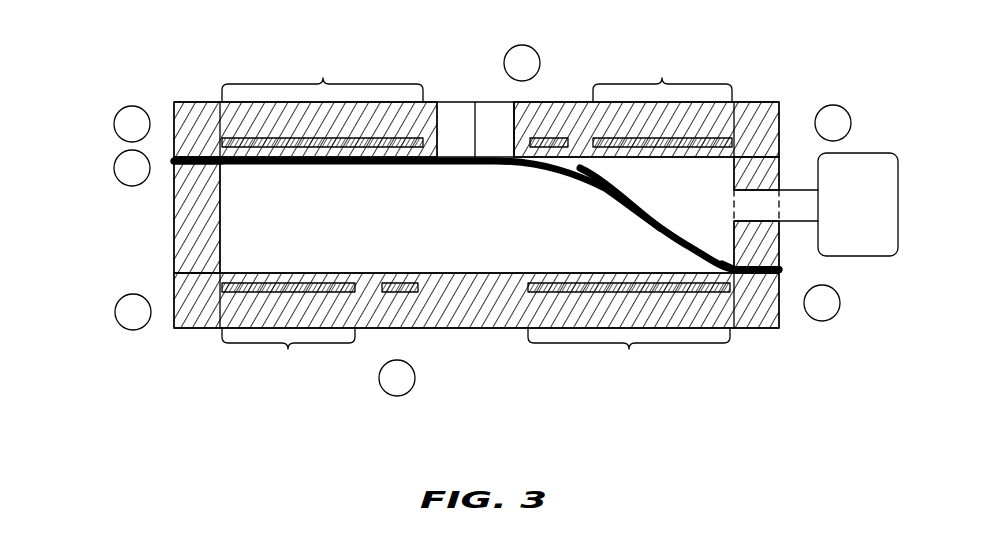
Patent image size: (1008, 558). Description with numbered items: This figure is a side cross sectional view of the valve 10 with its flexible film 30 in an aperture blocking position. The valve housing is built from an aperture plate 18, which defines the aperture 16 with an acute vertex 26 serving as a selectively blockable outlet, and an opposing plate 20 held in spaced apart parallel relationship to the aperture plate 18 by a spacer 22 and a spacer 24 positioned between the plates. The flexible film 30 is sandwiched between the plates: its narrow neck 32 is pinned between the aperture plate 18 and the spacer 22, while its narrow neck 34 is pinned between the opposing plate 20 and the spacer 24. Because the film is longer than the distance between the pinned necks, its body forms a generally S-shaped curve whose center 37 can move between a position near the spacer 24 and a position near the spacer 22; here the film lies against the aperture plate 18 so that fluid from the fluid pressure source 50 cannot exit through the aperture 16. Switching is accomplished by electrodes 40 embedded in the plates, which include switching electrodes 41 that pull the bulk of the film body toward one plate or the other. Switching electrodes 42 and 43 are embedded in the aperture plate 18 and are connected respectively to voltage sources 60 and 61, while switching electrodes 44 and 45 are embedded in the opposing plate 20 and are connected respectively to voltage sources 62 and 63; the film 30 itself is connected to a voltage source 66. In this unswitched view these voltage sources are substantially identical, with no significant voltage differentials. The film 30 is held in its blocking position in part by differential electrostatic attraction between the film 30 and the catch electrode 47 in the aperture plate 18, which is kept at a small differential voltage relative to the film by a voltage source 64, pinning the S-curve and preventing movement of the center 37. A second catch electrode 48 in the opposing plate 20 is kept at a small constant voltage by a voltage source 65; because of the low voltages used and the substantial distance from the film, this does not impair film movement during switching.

The valve 10 is at (163, 86).
The aperture 16 is at (455, 99).
The aperture plate 18 is at (205, 105).
The opposing plate 20 is at (745, 325).
The spacer 22 is at (174, 245).
The spacer 24 is at (770, 253).
The acute vertex 26 is at (512, 123).
The flexible film 30 is at (448, 165).
The neck 32 is at (221, 166).
The neck 34 is at (722, 258).
The center of S-curve 37 is at (618, 195).
The electrodes 40 is at (322, 213).
The switching electrodes 41 is at (630, 215).
The switching electrode 42 is at (285, 166).
The switching electrode 43 is at (658, 155).
The switching electrode 44 is at (288, 272).
The switching electrode 45 is at (627, 273).
The catch electrode 47 is at (565, 138).
The catch electrode 48 is at (407, 293).
The fluid pressure source 50 is at (858, 204).
The voltage source 60 is at (222, 145).
The voltage source 61 is at (733, 145).
The voltage source 62 is at (222, 288).
The voltage source 63 is at (731, 290).
The voltage source 64 is at (536, 138).
The voltage source 65 is at (396, 293).
The voltage source 66 is at (176, 162).